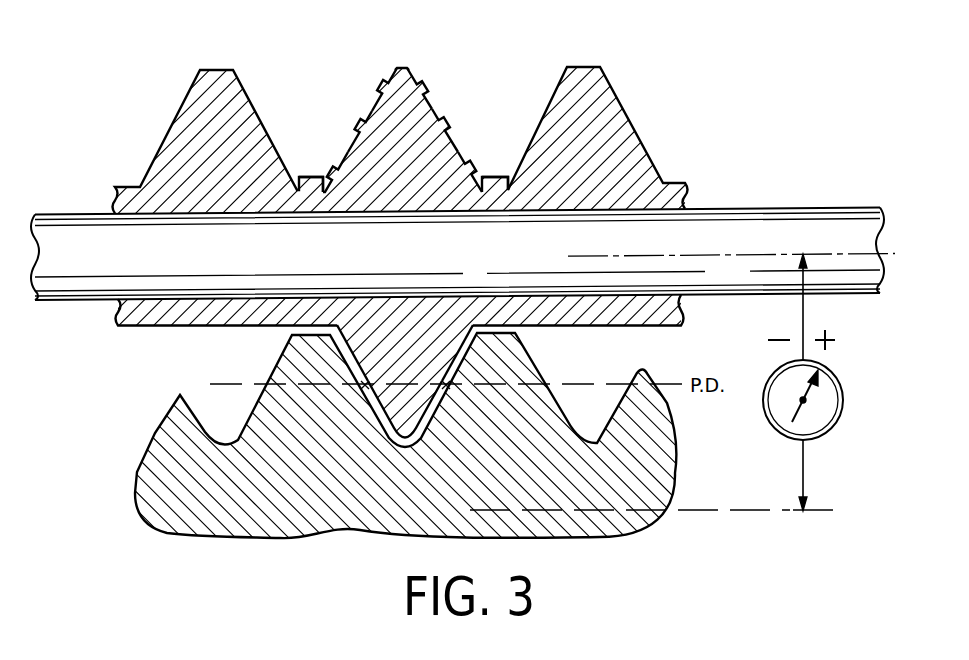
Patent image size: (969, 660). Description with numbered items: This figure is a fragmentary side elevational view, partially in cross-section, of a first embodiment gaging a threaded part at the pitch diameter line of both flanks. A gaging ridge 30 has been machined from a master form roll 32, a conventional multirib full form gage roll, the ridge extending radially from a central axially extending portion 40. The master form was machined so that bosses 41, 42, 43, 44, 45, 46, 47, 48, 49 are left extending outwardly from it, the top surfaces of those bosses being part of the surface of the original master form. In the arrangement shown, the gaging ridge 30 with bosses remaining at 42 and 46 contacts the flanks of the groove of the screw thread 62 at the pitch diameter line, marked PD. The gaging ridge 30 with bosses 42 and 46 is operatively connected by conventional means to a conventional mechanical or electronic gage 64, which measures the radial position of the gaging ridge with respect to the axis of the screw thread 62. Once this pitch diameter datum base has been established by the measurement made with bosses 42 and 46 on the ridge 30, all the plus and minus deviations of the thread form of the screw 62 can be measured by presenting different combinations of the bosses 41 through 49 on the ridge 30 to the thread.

The gaging ridge 30 is at (430, 353).
The master form roll 32 is at (592, 125).
The central axially extending portion 40 is at (688, 263).
The boss 41 is at (332, 180).
The boss 42 is at (355, 125).
The boss 43 is at (377, 86).
The boss 44 is at (400, 67).
The boss 45 is at (426, 82).
The boss 46 is at (448, 118).
The boss 47 is at (470, 168).
The boss 48 is at (303, 179).
The boss 49 is at (496, 182).
The screw thread 62 is at (160, 507).
The gage 64 is at (775, 396).